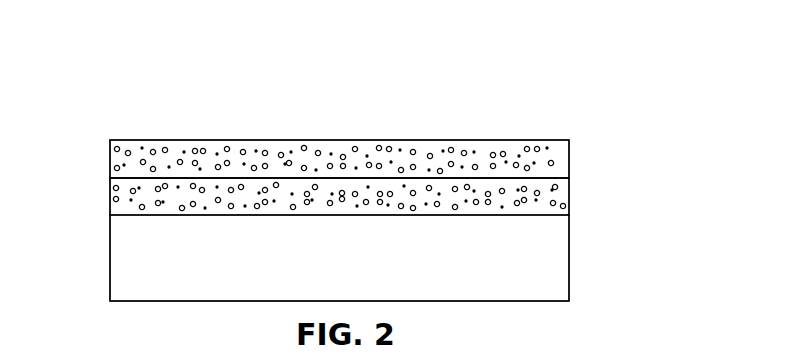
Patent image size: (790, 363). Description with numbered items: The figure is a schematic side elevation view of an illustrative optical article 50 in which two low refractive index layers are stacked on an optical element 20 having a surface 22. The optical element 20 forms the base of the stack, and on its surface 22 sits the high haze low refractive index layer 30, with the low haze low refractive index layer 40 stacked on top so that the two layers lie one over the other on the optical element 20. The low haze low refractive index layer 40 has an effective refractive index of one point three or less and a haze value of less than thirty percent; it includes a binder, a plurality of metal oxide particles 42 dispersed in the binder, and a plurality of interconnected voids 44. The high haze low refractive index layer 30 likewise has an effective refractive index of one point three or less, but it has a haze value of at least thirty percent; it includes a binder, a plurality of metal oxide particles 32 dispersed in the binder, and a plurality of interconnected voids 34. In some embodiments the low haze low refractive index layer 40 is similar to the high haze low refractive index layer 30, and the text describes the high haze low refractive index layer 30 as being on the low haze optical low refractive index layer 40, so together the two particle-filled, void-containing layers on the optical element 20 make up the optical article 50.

The optical article 50 is at (588, 62).
The optical element 20 is at (353, 271).
The low haze low refractive index layer 40 is at (110, 165).
The high haze low refractive index layer 30 is at (110, 197).
The metal oxide particles 42 is at (243, 155).
The interconnected voids 44 is at (402, 150).
The metal oxide particles 32 is at (558, 186).
The interconnected voids 34 is at (568, 208).
The surface 22 is at (543, 213).